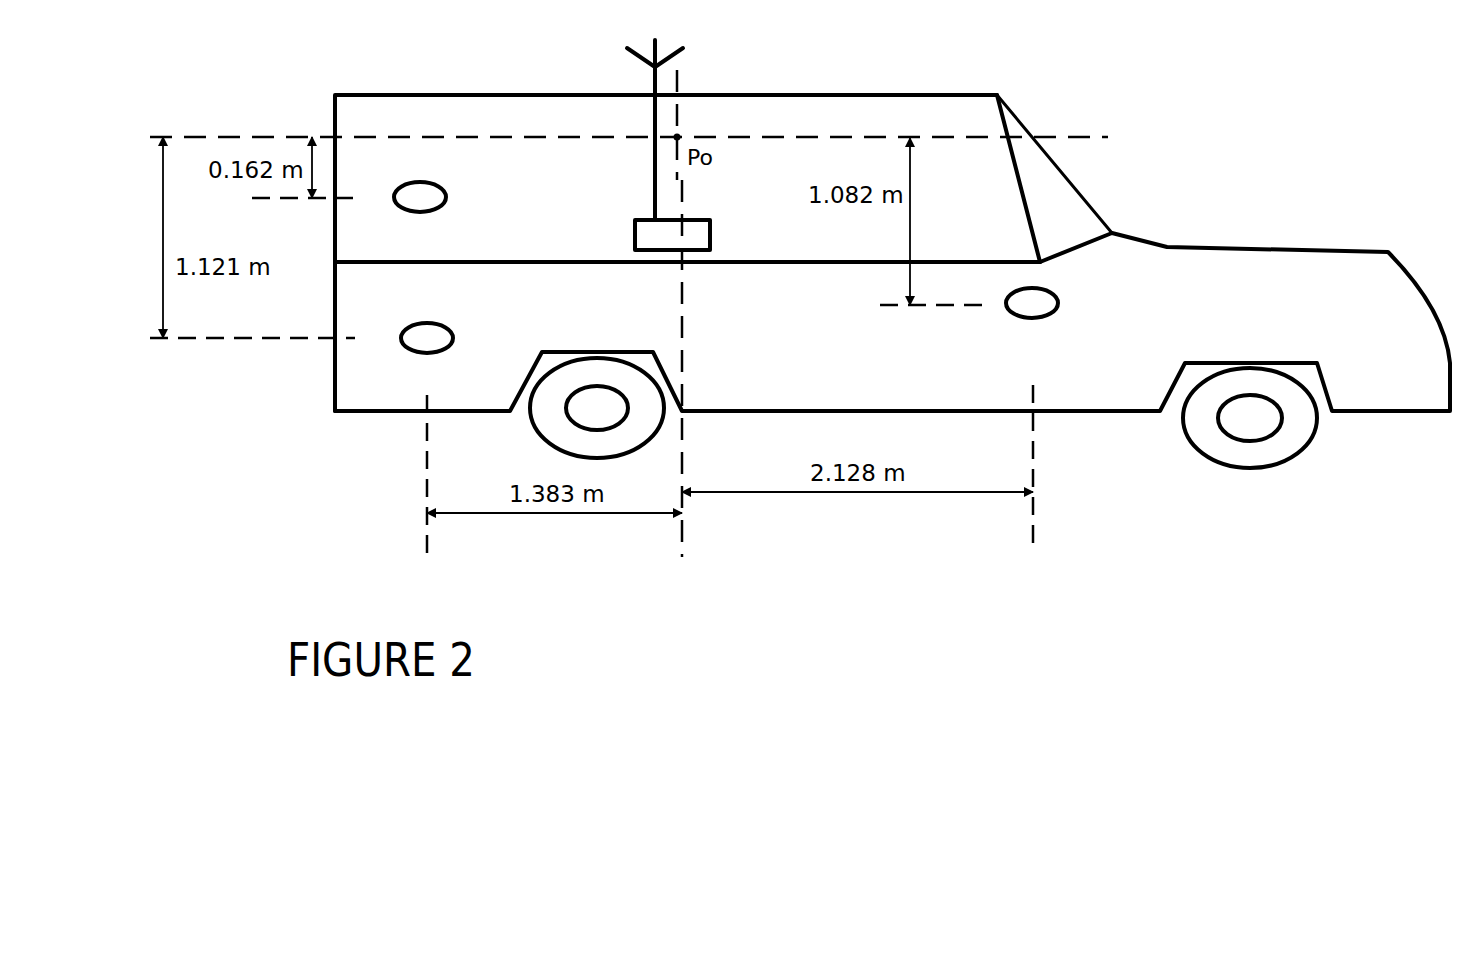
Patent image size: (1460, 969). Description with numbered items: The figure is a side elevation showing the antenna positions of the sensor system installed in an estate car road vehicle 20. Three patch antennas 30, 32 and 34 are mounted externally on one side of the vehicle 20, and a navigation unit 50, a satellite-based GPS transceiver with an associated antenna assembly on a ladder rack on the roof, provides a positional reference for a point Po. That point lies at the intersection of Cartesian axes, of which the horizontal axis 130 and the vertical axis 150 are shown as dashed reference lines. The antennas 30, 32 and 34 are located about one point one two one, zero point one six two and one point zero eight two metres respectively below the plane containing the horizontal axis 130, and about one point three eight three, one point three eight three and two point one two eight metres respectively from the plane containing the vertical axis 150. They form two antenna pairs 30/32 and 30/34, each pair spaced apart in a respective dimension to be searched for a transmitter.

The road vehicle 20 is at (1220, 238).
The patch antenna 30 is at (428, 340).
The patch antenna 32 is at (416, 200).
The patch antenna 34 is at (1033, 303).
The navigation unit 50 is at (663, 233).
The Cartesian axis 130 is at (240, 135).
The Cartesian axis 150 is at (684, 325).